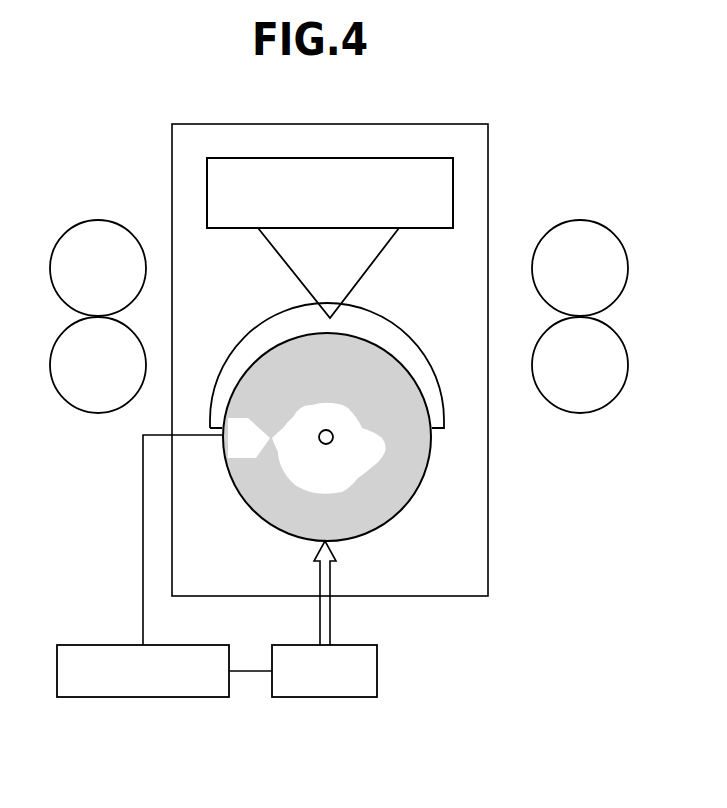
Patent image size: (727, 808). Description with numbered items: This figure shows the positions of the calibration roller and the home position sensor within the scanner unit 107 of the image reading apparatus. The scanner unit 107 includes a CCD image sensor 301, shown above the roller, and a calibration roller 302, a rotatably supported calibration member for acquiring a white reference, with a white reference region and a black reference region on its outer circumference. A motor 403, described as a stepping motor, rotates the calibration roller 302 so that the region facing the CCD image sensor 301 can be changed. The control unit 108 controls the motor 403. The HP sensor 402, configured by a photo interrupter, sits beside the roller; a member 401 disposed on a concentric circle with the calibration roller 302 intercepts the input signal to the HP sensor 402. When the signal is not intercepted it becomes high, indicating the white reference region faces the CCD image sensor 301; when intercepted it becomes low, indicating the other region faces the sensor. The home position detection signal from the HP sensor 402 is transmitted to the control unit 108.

The scanner unit 107 is at (450, 597).
The control unit 108 is at (88, 645).
The CCD image sensor 301 is at (442, 171).
The calibration roller 302 is at (400, 488).
The member 401 is at (355, 455).
The home position (HP) sensor 402 is at (240, 445).
The motor 403 is at (378, 675).